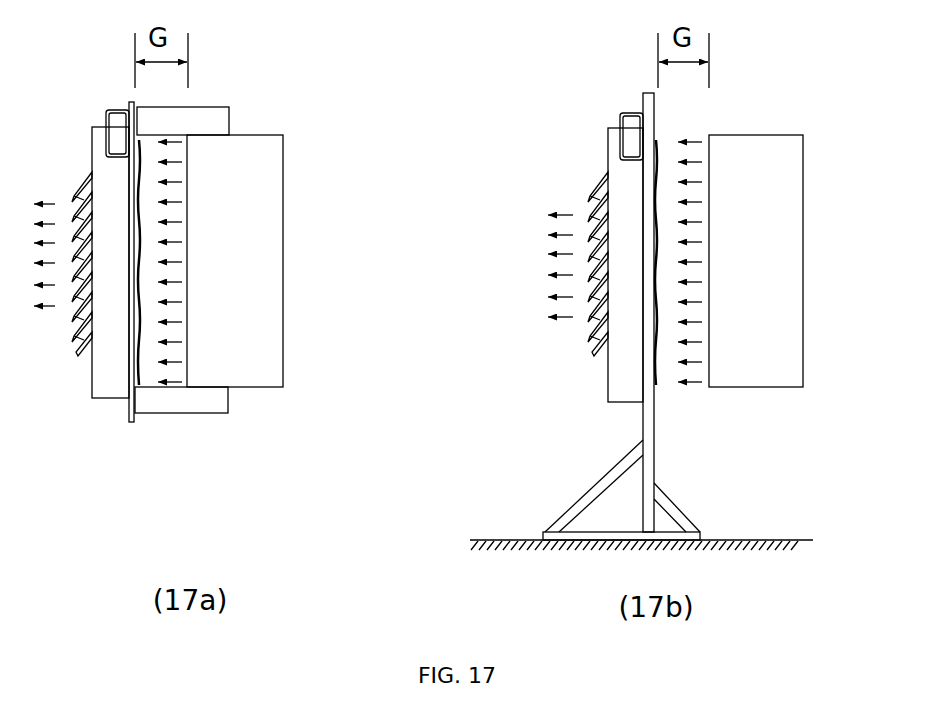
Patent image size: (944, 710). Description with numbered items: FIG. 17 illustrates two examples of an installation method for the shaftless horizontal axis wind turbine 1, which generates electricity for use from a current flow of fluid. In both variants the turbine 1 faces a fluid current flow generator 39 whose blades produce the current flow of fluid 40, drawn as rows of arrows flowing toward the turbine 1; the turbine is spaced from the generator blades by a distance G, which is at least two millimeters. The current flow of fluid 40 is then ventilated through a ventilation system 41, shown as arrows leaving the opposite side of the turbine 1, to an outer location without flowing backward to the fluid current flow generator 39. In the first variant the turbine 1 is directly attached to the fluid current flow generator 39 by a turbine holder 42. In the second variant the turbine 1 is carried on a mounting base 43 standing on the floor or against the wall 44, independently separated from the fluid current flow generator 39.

The heat dissipation panel / device 1 is at (100, 128).
The fluid current flow generator 39 is at (262, 152).
The current flow of fluid 40 is at (172, 158).
The ventilation system 41 is at (48, 306).
The turbine holder 42 is at (213, 115).
The mounting base 43 is at (645, 427).
The floor or wall 44 is at (800, 542).